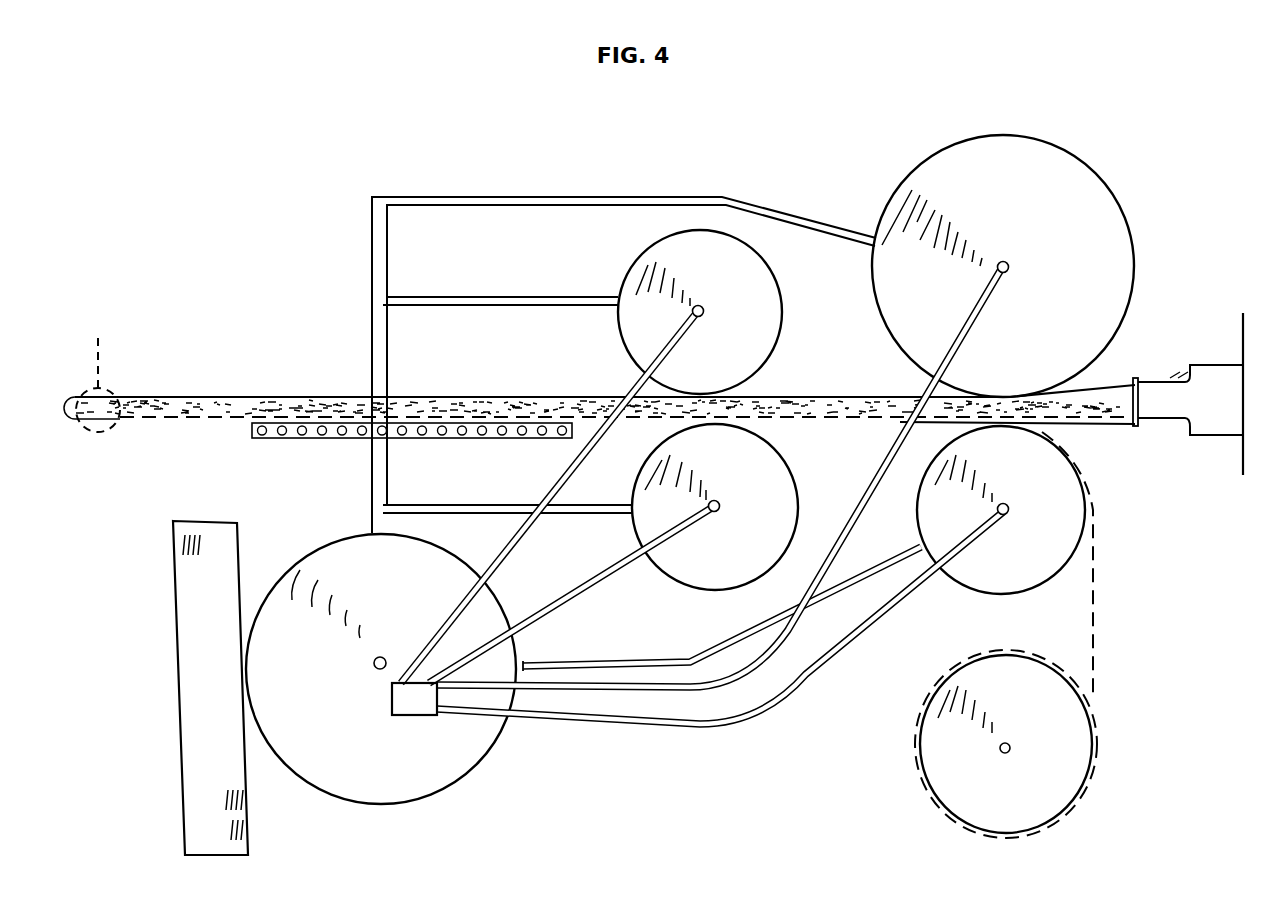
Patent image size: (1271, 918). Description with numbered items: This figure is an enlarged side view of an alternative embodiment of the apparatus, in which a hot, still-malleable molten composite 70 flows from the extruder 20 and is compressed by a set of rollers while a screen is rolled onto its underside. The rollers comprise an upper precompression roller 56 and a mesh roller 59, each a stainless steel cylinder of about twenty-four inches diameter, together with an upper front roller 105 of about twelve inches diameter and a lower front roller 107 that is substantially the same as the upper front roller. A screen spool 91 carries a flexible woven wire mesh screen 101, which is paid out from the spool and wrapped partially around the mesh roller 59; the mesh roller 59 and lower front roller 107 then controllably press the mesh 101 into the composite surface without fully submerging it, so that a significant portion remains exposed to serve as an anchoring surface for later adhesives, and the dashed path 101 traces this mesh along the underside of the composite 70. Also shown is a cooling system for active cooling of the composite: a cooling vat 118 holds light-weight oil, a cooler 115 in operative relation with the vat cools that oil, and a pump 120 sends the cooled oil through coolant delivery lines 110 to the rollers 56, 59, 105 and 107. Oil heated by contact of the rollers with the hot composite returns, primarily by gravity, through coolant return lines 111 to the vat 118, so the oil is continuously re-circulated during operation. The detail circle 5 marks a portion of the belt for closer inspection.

The section line / detail circle 5 is at (98, 372).
The extruder 20 is at (1172, 380).
The upper precompression roller 56 is at (1060, 185).
The mesh roller 59 is at (1048, 525).
The molten composite 70 is at (203, 400).
The screen spool 91 is at (1055, 750).
The woven wire mesh screen 101 is at (172, 422).
The upper front roller 105 is at (745, 306).
The lower front roller 107 is at (768, 500).
The coolant delivery lines 110 is at (563, 590).
The coolant return lines 111 is at (484, 203).
The cooler 115 is at (205, 742).
The cooling vat 118 is at (455, 763).
The pump 120 is at (413, 705).